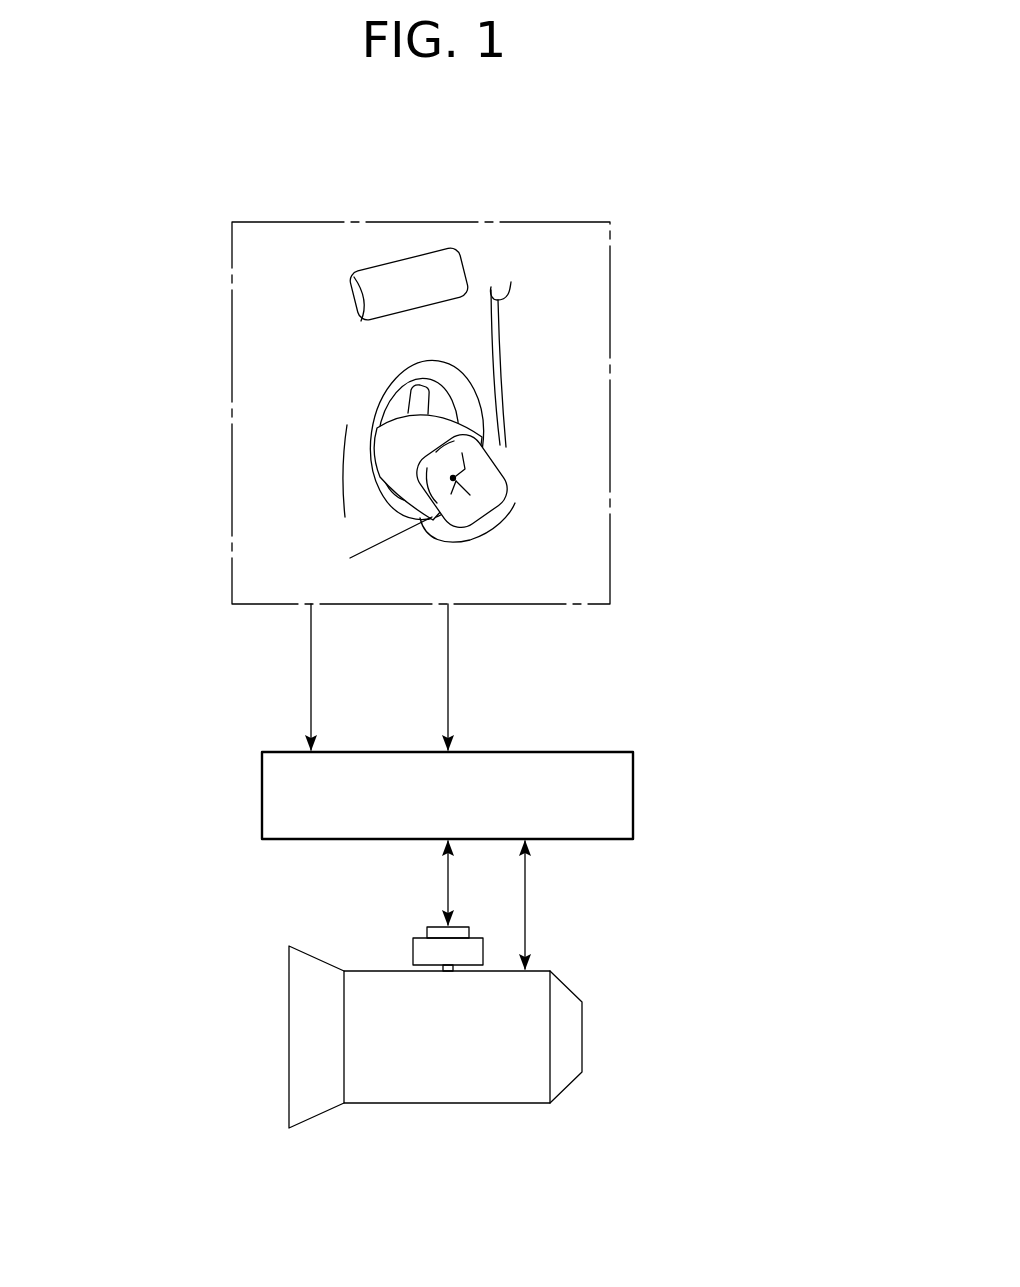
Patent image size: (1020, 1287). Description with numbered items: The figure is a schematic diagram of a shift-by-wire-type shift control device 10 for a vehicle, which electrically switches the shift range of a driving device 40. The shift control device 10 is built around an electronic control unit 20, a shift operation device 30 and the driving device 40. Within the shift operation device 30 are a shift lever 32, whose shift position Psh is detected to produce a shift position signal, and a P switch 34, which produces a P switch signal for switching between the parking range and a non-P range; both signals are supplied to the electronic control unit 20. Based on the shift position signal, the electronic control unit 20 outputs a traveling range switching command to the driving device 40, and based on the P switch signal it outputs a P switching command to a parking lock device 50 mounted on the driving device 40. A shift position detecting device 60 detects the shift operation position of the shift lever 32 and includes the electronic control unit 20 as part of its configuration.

The shift control device 10 is at (136, 532).
The electronic control unit 20 is at (593, 750).
The shift operation device 30 is at (517, 221).
The shift lever 32 is at (520, 466).
The P switch 34 is at (368, 272).
The driving device 40 is at (383, 1104).
The parking lock device 50 is at (415, 950).
The shift position detecting device 60 is at (728, 660).